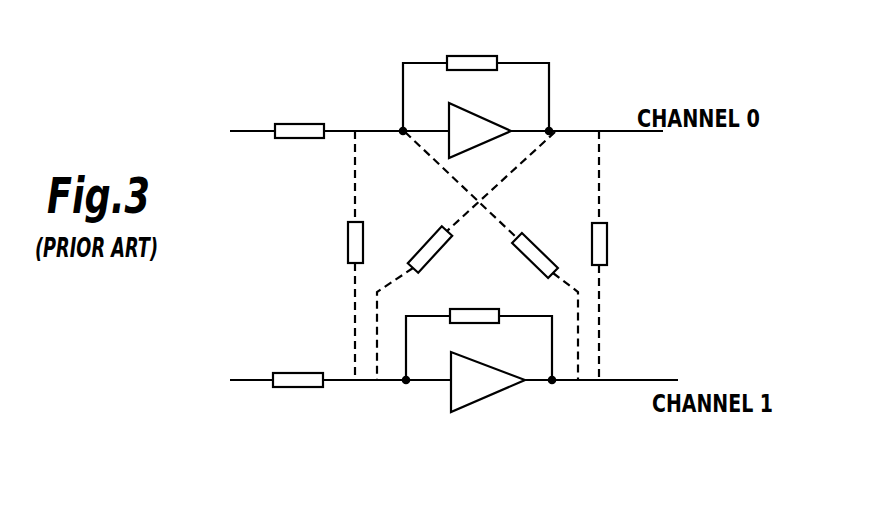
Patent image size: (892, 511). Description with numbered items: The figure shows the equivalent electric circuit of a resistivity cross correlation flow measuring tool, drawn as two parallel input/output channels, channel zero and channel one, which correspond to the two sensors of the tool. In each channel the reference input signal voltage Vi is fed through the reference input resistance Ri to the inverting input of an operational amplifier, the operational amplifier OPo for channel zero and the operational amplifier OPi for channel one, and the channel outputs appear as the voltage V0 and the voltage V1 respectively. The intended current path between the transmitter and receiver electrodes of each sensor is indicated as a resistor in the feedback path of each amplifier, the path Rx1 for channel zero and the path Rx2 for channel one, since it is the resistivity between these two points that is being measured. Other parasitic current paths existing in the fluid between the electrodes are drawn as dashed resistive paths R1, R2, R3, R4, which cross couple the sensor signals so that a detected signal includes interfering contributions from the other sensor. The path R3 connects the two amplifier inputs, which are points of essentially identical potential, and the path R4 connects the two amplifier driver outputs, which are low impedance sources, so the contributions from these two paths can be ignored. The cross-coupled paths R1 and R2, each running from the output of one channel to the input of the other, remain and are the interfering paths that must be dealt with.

The reference input signal voltage Vi is at (226, 237).
The channel 0 output voltage V0 is at (668, 153).
The channel 1 output voltage V1 is at (674, 364).
The reference input resistance Ri is at (298, 242).
The measured resistive path of first sensor Rx1 is at (476, 78).
The measured resistive path of second sensor Rx2 is at (479, 329).
The operational amplifier of channel 0 OPo is at (485, 125).
The operational amplifier of channel 1 OPi is at (488, 376).
The parasitic resistive path R1 is at (466, 256).
The parasitic resistive path R2 is at (491, 256).
The parasitic resistive path R3 is at (338, 255).
The parasitic resistive path R4 is at (616, 255).